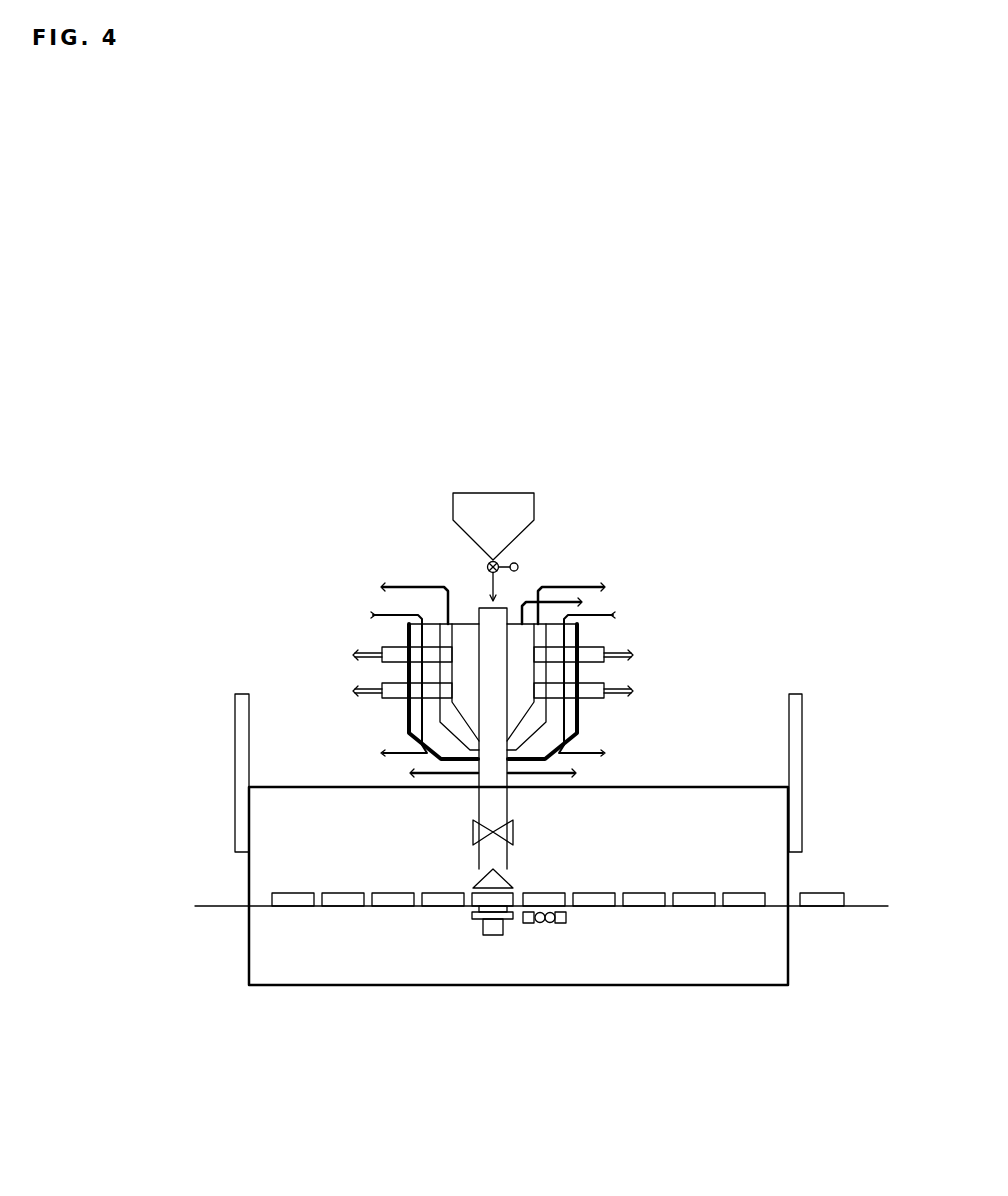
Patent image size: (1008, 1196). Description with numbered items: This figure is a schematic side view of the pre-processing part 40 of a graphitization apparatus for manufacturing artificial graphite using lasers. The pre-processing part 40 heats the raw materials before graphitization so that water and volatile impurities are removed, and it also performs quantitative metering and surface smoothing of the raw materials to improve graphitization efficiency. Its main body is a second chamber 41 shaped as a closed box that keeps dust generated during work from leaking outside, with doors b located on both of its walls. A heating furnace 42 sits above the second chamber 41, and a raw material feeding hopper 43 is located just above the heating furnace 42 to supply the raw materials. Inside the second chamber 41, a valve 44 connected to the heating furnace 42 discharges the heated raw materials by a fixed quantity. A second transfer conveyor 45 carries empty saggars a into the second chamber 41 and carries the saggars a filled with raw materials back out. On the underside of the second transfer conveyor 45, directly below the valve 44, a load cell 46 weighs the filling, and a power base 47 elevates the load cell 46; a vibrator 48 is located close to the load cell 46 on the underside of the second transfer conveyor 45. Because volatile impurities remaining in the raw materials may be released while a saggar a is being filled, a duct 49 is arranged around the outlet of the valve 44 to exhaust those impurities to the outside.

The pre-processing part 40 is at (172, 283).
The second chamber 41 is at (749, 786).
The heating furnace 42 is at (632, 582).
The raw material feeding hopper 43 is at (507, 490).
The valve 44 is at (515, 830).
The second transfer conveyor 45 is at (866, 908).
The load cell 46 is at (470, 911).
The power base 47 is at (490, 936).
The vibrator 48 is at (545, 925).
The duct 49 is at (478, 879).
The saggar a is at (293, 893).
The doors b is at (235, 728).